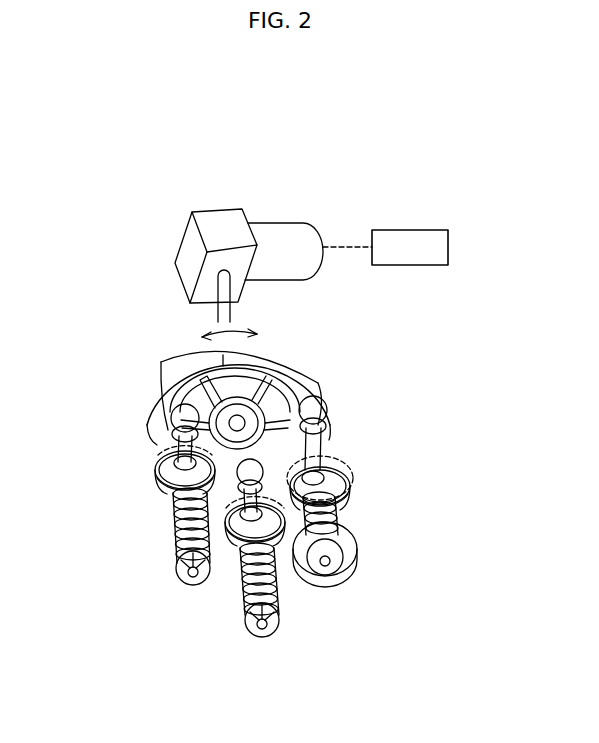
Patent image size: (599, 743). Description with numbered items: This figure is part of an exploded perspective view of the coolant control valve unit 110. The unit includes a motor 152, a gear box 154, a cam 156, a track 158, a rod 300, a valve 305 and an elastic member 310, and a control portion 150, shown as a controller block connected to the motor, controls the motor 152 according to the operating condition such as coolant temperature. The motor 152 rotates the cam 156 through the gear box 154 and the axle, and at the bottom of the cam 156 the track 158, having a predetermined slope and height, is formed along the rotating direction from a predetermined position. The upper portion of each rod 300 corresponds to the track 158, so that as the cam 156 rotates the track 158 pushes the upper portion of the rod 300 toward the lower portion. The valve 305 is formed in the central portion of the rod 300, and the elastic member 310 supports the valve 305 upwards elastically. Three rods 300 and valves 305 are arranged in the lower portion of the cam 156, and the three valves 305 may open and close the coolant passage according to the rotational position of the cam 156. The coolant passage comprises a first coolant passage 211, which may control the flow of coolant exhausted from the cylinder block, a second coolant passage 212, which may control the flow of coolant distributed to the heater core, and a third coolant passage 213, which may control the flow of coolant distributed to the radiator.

The coolant control valve unit 110 is at (152, 287).
The control portion 150 is at (412, 230).
The motor 152 is at (283, 232).
The gear box 154 is at (215, 217).
The cam 156 is at (290, 343).
The track 158 is at (298, 385).
The first coolant passage 211 is at (220, 510).
The second coolant passage 212 is at (340, 475).
The third coolant passage 213 is at (160, 446).
The rod 300 is at (318, 452).
The valve 305 is at (342, 483).
The elastic member 310 is at (333, 508).